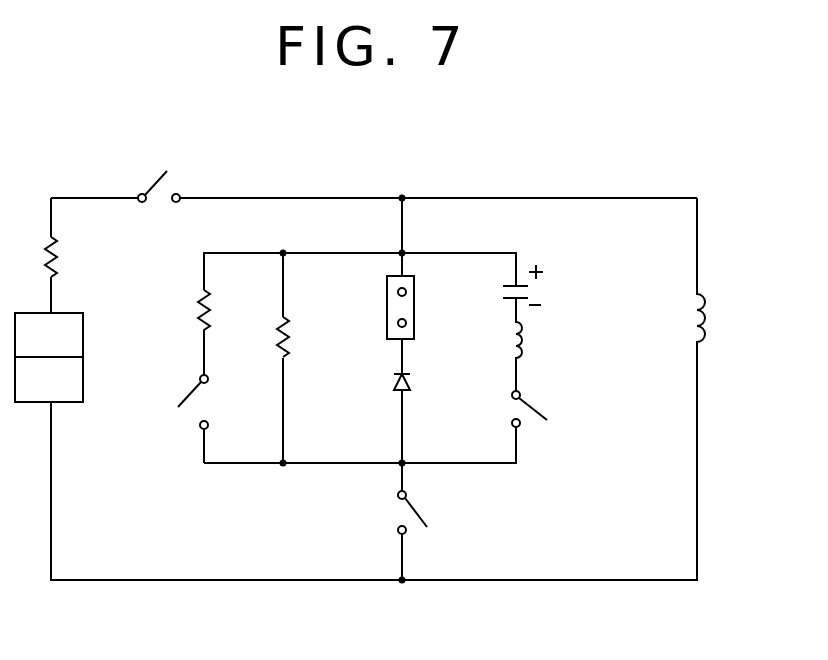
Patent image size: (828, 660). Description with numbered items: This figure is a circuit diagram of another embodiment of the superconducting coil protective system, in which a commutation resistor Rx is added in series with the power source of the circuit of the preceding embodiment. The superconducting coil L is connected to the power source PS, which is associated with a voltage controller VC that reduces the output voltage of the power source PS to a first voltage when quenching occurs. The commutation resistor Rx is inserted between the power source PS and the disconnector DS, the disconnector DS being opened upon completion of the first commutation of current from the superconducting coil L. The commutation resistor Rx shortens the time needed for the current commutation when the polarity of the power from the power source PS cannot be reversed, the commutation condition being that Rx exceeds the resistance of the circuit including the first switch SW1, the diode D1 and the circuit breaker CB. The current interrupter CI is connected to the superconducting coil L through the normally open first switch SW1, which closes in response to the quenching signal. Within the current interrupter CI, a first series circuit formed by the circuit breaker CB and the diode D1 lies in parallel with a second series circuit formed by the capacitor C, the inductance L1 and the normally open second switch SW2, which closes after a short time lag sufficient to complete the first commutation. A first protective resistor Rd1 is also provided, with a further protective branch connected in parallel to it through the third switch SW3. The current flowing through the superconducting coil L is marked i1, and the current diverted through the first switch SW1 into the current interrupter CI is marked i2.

The disconnector DS is at (159, 166).
The commutation resistor Rx is at (71, 257).
The power source PS is at (49, 335).
The voltage controller VC is at (49, 379).
The third switch SW3 is at (168, 376).
The first protective resistor Rd1 is at (309, 337).
The circuit breaker CB is at (424, 307).
The current interrupter CI is at (476, 362).
The diode D1 is at (423, 385).
The capacitor C is at (536, 291).
The inductance L1 is at (536, 340).
The second switch SW2 is at (561, 395).
The first switch SW1 is at (441, 512).
The superconducting coil L is at (714, 318).
The current i1 is at (730, 198).
The current i2 is at (455, 547).